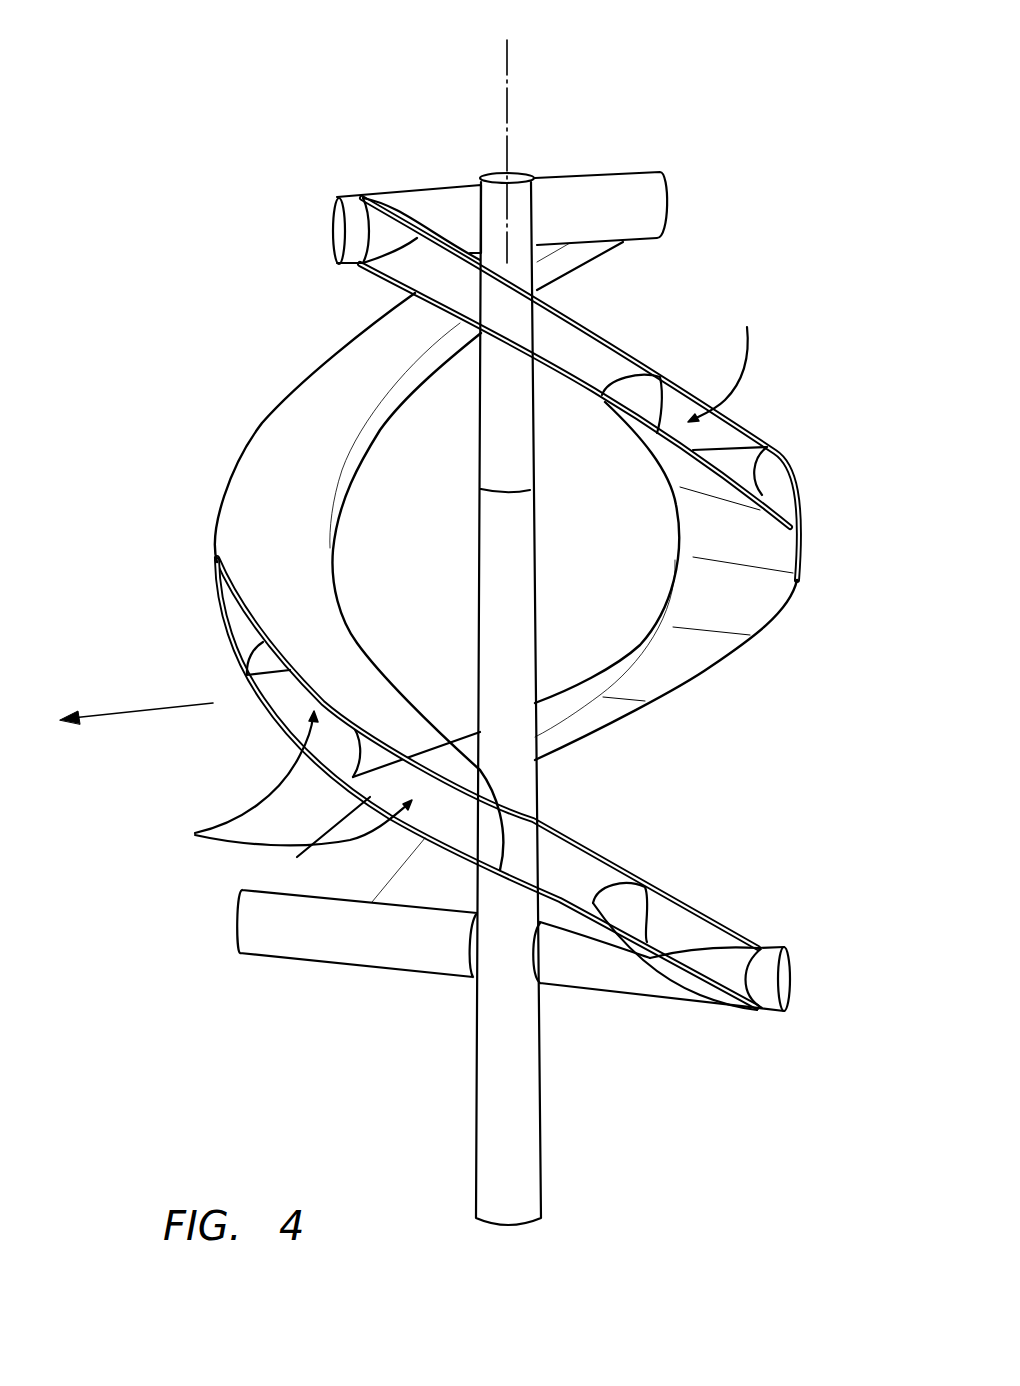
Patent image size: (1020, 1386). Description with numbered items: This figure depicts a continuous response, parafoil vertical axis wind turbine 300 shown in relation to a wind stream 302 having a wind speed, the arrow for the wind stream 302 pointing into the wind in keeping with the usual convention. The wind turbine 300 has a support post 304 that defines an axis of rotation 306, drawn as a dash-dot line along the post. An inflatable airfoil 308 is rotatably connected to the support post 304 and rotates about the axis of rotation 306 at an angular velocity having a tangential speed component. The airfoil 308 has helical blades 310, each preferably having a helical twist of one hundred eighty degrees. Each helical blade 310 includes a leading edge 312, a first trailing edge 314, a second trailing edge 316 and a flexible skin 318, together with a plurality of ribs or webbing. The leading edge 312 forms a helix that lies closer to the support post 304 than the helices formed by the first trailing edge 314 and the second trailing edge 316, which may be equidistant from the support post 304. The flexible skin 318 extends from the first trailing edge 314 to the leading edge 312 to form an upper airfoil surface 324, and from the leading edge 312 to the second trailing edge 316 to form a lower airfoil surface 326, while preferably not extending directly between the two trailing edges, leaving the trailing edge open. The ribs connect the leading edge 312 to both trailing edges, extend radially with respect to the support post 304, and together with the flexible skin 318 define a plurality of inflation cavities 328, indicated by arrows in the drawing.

The continuous response, vertical axis wind turbine 300 is at (478, 626).
The wind stream 302 is at (145, 712).
The support post 304 is at (542, 1133).
The axis of rotation 306 is at (508, 85).
The inflatable airfoil 308 is at (503, 591).
The helical blade 310 is at (261, 414).
The leading edge 312 is at (338, 550).
The first trailing edge 314 is at (620, 346).
The second trailing edge 316 is at (215, 603).
The flexible skin 318 is at (296, 531).
The upper airfoil surface 324 is at (325, 387).
The lower airfoil surface 326 is at (647, 678).
The inflation cavities 328 is at (183, 835).